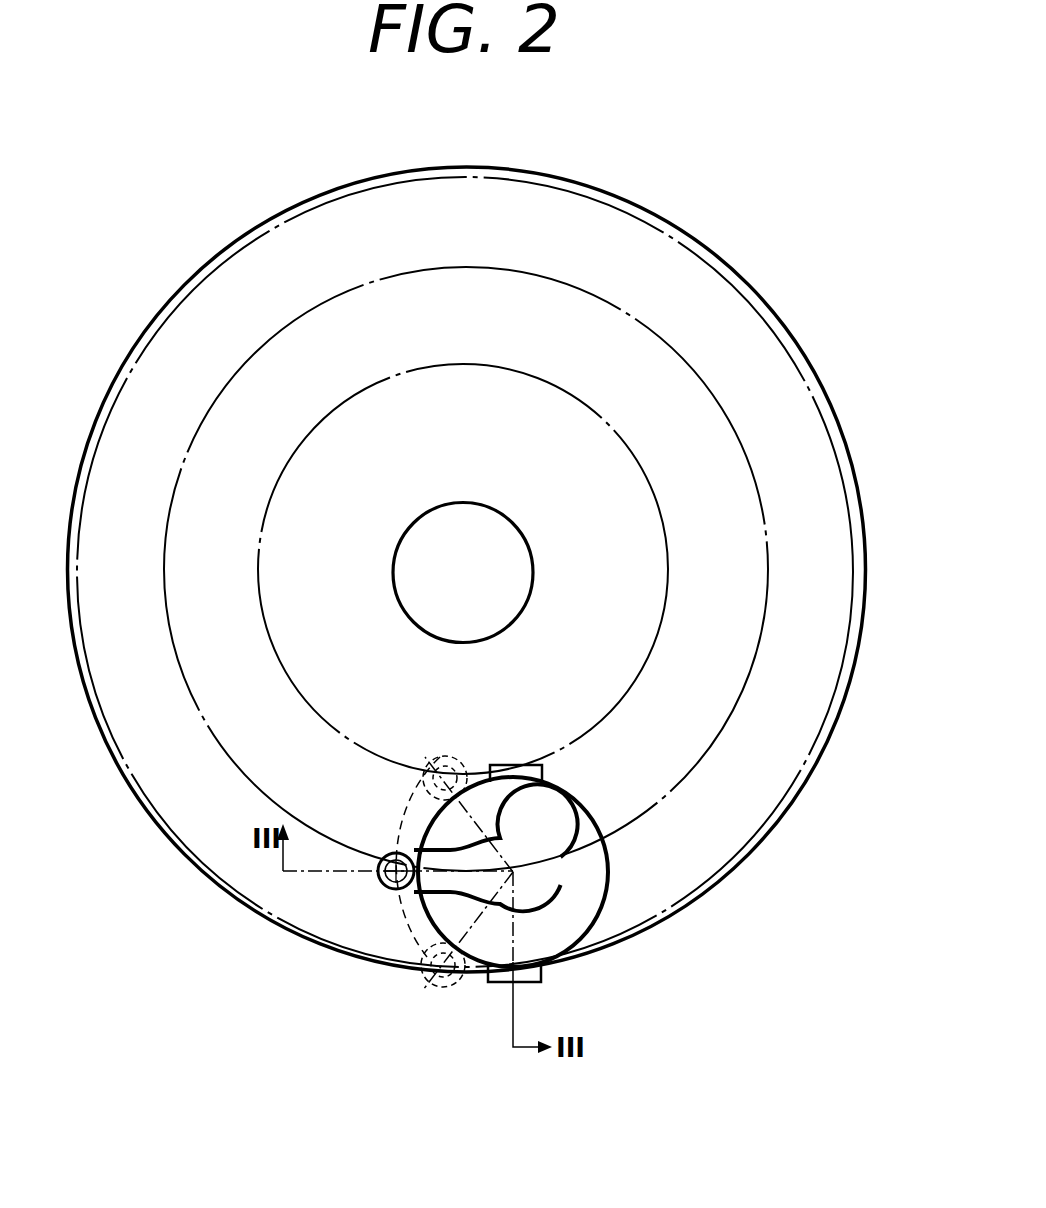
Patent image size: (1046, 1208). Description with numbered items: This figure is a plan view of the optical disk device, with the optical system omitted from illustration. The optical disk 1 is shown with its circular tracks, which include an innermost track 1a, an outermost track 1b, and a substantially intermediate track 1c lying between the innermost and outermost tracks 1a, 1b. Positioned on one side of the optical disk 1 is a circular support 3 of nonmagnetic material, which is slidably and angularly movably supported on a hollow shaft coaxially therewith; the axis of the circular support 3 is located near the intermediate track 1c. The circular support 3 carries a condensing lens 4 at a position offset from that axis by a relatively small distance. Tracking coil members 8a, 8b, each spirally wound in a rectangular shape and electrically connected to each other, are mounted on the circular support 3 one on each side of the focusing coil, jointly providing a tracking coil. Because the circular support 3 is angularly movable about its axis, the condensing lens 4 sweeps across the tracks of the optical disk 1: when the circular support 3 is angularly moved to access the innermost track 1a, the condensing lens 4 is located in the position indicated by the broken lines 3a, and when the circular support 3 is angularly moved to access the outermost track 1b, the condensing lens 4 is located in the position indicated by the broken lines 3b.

The optical disk 1 is at (793, 342).
The innermost track 1a is at (655, 488).
The outermost track 1b is at (858, 550).
The intermediate track 1c is at (757, 652).
The circular support 3 is at (547, 884).
The broken lines indicating lens position for innermost track 3a is at (438, 757).
The broken lines indicating lens position for outermost track 3b is at (446, 988).
The condensing lens 4 is at (396, 853).
The tracking coil member 8a is at (517, 768).
The tracking coil member 8b is at (540, 980).